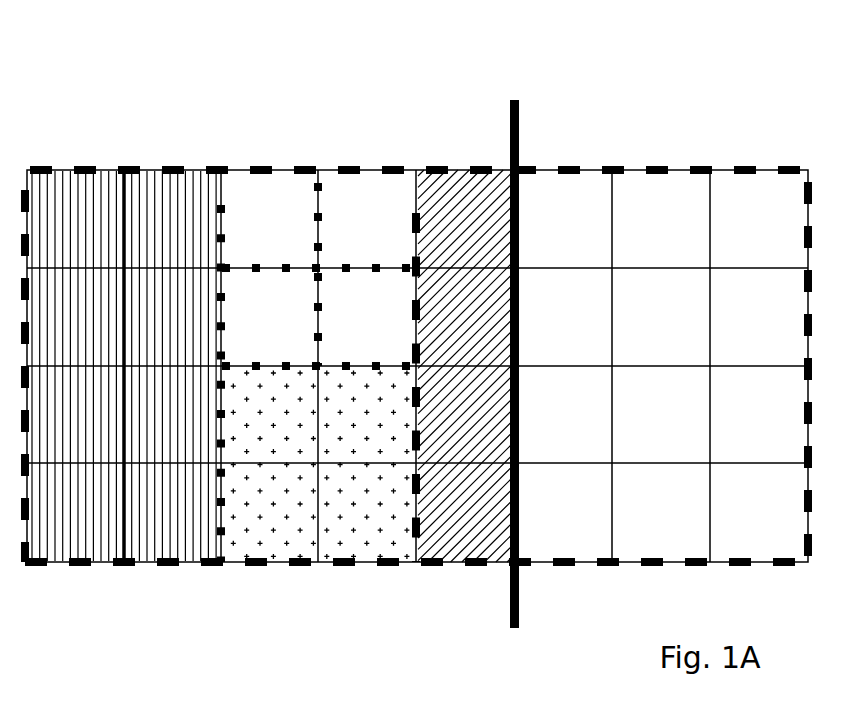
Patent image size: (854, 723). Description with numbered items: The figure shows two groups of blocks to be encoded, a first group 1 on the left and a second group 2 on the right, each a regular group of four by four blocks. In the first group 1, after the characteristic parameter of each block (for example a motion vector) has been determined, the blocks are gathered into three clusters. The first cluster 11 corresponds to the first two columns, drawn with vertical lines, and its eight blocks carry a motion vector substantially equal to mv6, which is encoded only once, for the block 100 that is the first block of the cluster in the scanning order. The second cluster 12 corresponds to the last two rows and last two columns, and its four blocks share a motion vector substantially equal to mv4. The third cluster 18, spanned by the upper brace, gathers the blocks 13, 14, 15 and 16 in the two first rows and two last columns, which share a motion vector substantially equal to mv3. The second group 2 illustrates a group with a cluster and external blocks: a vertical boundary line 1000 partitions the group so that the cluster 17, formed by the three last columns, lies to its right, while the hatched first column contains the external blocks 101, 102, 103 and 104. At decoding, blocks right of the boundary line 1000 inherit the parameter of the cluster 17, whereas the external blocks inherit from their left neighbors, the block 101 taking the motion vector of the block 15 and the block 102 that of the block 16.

The first group of blocks 1 is at (418, 568).
The second group of blocks 2 is at (418, 568).
The first cluster 11 is at (215, 565).
The second cluster 12 is at (418, 568).
The block 13 is at (280, 330).
The block 14 is at (246, 222).
The block 15 is at (392, 207).
The block 16 is at (375, 330).
The cluster 17 is at (519, 165).
The third cluster 18 is at (222, 163).
The block 100 is at (80, 222).
The external block 101 is at (492, 192).
The external block 102 is at (470, 293).
The external block 103 is at (457, 410).
The external block 104 is at (493, 512).
The boundary line 1000 is at (519, 113).